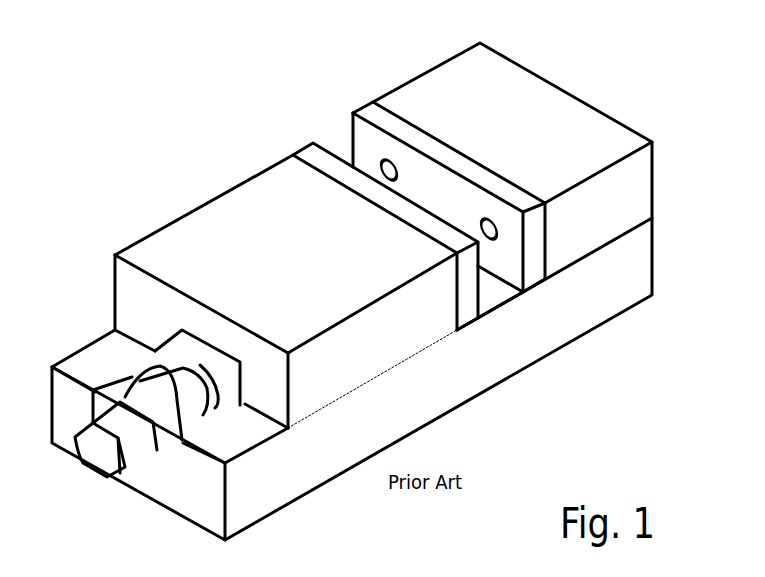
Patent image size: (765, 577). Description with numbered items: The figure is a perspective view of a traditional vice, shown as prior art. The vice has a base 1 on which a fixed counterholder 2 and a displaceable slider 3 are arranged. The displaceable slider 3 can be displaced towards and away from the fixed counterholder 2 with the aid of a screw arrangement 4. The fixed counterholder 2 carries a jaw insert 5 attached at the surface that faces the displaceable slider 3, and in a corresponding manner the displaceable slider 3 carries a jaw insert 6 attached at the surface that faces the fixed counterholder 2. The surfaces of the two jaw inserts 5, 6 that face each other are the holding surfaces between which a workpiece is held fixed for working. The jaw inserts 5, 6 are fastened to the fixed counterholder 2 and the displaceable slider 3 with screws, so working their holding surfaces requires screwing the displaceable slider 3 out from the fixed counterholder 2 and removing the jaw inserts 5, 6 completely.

The base 1 is at (492, 345).
The fixed counterholder 2 is at (530, 112).
The displaceable slider 3 is at (215, 245).
The screw arrangement 4 is at (100, 452).
The jaw insert 5 is at (395, 133).
The jaw insert 6 is at (323, 162).